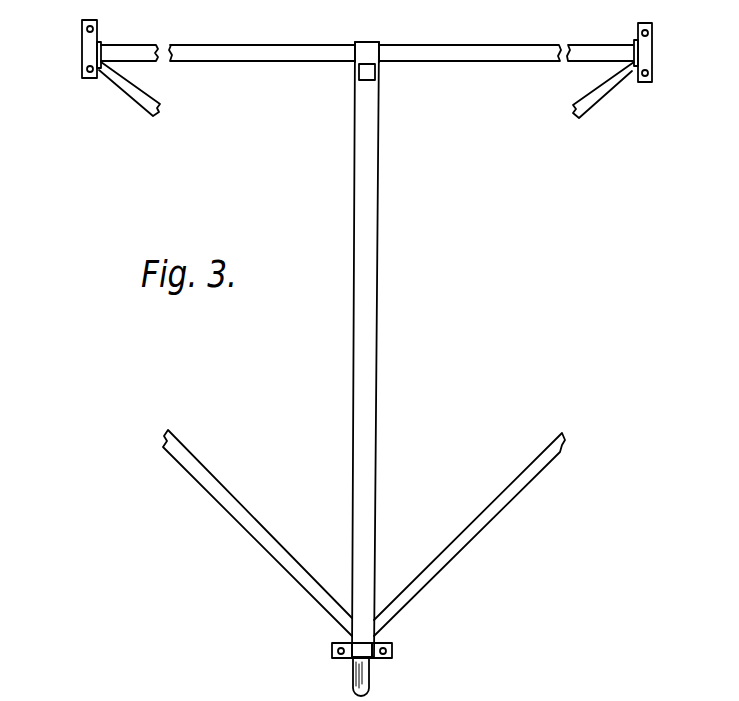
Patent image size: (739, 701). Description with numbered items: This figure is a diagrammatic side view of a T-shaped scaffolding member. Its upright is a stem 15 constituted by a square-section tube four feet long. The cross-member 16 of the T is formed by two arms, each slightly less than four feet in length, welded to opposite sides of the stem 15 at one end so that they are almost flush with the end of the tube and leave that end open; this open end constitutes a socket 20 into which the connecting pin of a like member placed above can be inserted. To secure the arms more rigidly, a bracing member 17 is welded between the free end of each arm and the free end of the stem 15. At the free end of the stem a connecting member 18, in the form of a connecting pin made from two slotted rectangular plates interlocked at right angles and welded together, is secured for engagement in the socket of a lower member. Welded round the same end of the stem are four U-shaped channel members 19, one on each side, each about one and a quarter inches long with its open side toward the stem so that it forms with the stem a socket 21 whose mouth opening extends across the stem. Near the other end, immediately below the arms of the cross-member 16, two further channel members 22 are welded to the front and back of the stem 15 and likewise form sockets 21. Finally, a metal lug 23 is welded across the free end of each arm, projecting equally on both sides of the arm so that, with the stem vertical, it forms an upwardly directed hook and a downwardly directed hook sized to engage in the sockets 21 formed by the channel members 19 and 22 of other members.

The stem 15 is at (378, 268).
The cross-member 16 is at (247, 63).
The bracing member 17 is at (142, 92).
The connecting member 18 is at (370, 681).
The channel member 19 is at (333, 655).
The socket 20 is at (368, 40).
The socket 21 is at (337, 643).
The channel member 22 is at (375, 72).
The lug 23 is at (82, 73).